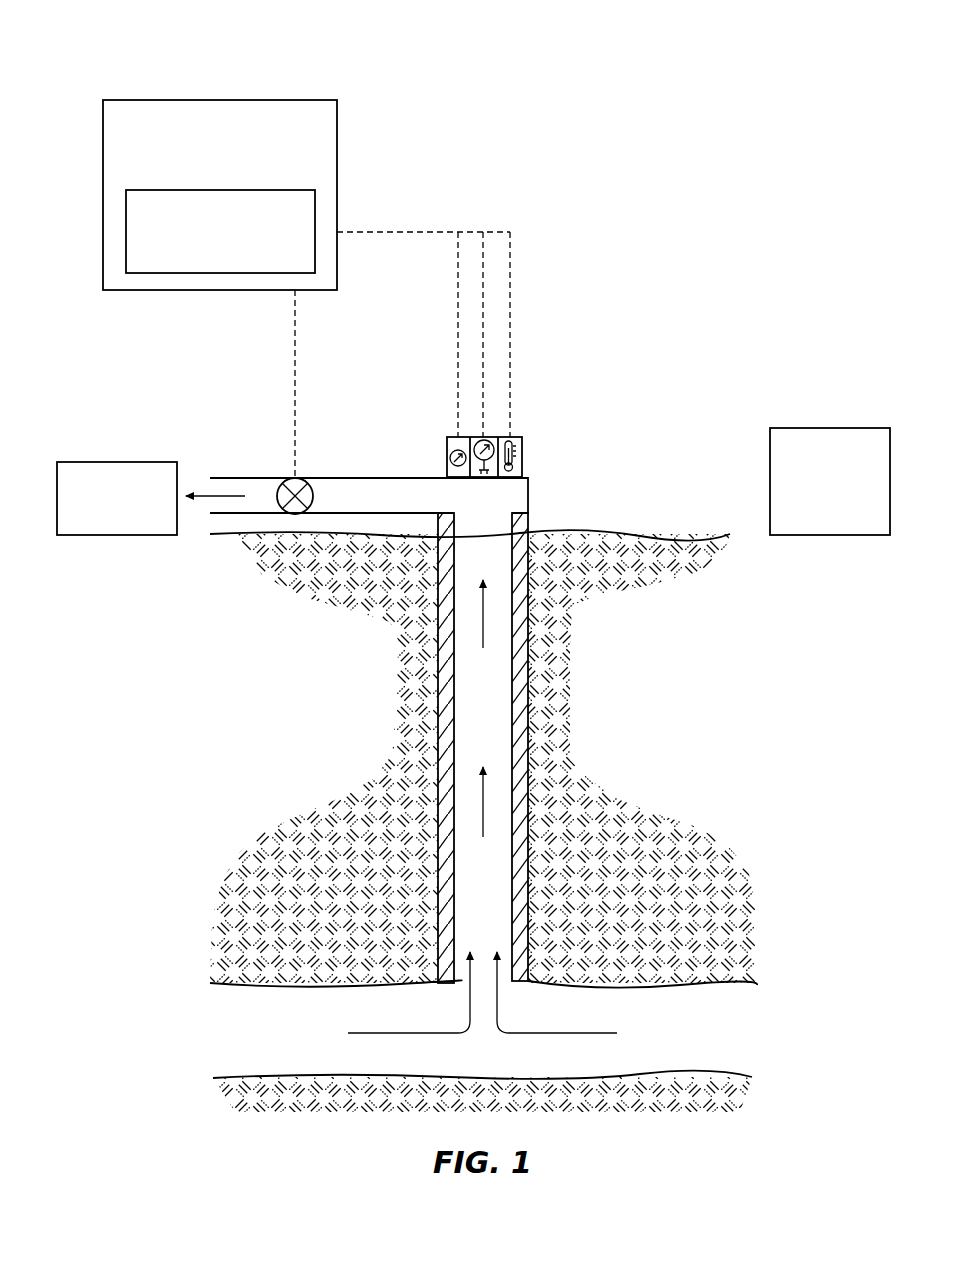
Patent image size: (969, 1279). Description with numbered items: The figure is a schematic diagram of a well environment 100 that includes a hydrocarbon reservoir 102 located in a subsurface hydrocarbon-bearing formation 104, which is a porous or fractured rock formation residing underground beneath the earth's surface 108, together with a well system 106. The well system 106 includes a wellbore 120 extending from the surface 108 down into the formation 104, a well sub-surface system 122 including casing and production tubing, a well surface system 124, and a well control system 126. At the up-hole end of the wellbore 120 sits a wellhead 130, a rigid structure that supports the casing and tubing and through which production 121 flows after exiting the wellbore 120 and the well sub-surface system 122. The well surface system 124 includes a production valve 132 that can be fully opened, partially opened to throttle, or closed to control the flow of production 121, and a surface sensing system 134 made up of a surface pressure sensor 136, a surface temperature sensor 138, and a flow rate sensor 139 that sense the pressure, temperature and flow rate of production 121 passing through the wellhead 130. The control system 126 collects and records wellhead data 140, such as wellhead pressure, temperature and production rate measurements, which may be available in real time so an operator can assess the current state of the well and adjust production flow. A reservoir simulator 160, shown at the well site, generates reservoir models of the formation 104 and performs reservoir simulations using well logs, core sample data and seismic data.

The well environment 100 is at (600, 113).
The hydrocarbon reservoir 102 is at (700, 1059).
The hydrocarbon-bearing formation 104 is at (637, 962).
The well system 106 is at (226, 70).
The surface 108 is at (690, 533).
The wellbore 120 is at (520, 720).
The production 121 is at (101, 524).
The well sub-surface system 122 is at (434, 745).
The well surface system 124 is at (580, 272).
The well control system 126 is at (204, 169).
The wellhead 130 is at (527, 525).
The production valve 132 is at (290, 480).
The surface sensing system 134 is at (530, 457).
The surface pressure sensor 136 is at (474, 437).
The surface temperature sensor 138 is at (510, 437).
The flow rate sensor 139 is at (447, 458).
The wellhead data 140 is at (204, 254).
The reservoir simulator 160 is at (814, 524).